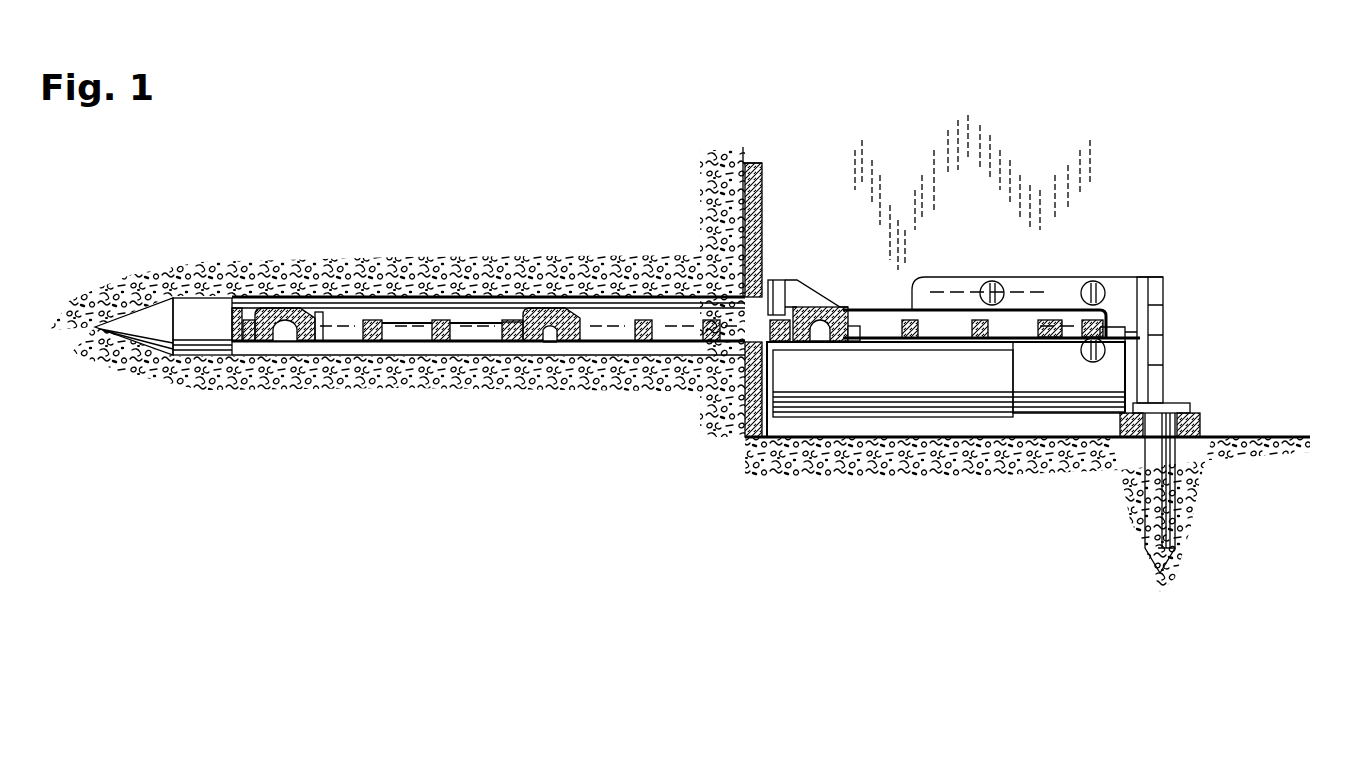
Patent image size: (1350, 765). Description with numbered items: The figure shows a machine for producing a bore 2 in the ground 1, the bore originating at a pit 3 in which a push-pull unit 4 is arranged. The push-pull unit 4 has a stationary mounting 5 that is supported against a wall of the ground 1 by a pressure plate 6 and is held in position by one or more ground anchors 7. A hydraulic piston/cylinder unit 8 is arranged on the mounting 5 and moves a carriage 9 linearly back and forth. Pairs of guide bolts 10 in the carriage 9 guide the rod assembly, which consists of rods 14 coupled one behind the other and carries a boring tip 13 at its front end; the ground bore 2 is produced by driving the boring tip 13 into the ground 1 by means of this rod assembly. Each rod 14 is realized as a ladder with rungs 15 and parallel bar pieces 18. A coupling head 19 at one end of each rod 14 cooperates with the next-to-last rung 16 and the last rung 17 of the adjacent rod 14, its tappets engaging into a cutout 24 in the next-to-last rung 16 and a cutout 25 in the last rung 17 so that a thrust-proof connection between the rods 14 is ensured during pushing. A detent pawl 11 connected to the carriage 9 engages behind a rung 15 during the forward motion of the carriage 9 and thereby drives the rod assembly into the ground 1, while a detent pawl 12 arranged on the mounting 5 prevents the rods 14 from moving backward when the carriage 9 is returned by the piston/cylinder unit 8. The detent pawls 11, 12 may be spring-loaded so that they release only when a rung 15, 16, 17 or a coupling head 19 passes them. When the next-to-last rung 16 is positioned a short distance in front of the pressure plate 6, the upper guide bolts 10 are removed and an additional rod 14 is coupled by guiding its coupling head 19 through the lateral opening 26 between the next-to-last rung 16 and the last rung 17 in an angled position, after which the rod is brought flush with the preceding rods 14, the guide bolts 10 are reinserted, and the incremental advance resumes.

The ground 1 is at (163, 272).
The bore 2 is at (443, 302).
The pit 3 is at (898, 188).
The push-pull unit 4 is at (1203, 270).
The stationary mounting 5 is at (812, 425).
The pressure plate 6 is at (762, 195).
The ground anchor 7 is at (1183, 405).
The hydraulic piston/cylinder unit 8 is at (870, 388).
The carriage 9 is at (1120, 292).
The guide bolts 10 is at (1088, 345).
The detent pawl 11 is at (855, 332).
The detent pawl 12 is at (778, 290).
The boring tip 13 is at (150, 318).
The rod 14 is at (372, 318).
The rung 15 is at (440, 345).
The next-to-last rung 16 is at (508, 345).
The last rung 17 is at (560, 345).
The parallel bar pieces 18 is at (477, 330).
The coupling head 19 is at (283, 320).
The cutout 24 is at (1048, 335).
The cutout 25 is at (1150, 328).
The lateral opening 26 is at (1075, 325).